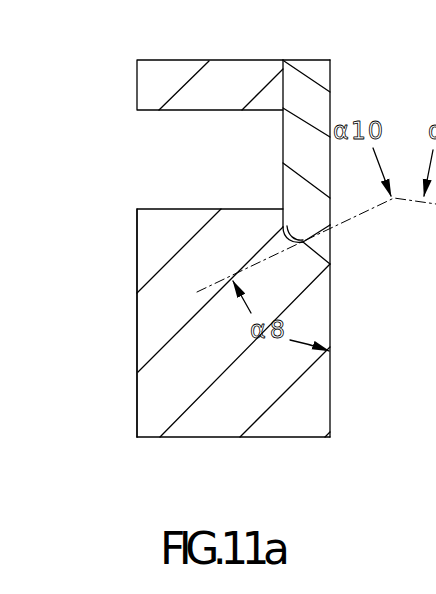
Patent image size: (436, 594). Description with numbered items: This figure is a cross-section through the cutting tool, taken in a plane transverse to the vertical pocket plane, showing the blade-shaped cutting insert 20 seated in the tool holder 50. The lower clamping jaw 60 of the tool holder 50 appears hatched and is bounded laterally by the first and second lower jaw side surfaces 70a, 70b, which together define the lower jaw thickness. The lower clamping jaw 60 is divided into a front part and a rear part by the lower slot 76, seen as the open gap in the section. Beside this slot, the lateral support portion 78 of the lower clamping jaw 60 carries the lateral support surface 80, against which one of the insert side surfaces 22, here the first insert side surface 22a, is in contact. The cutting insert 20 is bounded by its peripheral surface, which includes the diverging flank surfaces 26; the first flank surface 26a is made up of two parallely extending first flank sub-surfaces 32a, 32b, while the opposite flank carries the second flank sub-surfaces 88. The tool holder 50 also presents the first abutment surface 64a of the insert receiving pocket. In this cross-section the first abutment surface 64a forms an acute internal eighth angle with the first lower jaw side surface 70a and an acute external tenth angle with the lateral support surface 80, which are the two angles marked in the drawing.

The lateral support portion 78 is at (218, 90).
The cutting insert 20 is at (302, 149).
The lateral support surface 80 is at (288, 91).
The first insert side surface 22a is at (346, 117).
The insert side surfaces 22 is at (425, 18).
The lower slot 76 is at (189, 188).
The first flank surface 26a is at (309, 244).
The first abutment surface 64a is at (316, 226).
The first flank sub-surface 32a is at (331, 250).
The first flank sub-surface 32b is at (281, 237).
The tool holder 50 is at (164, 323).
The lower clamping jaw 60 is at (238, 390).
The first lower jaw side surface 70a is at (333, 366).
The second lower jaw side surface 70b is at (136, 366).
The second flank sub-surfaces 88 is at (425, 277).
The diverging flank surfaces 26 is at (428, 326).